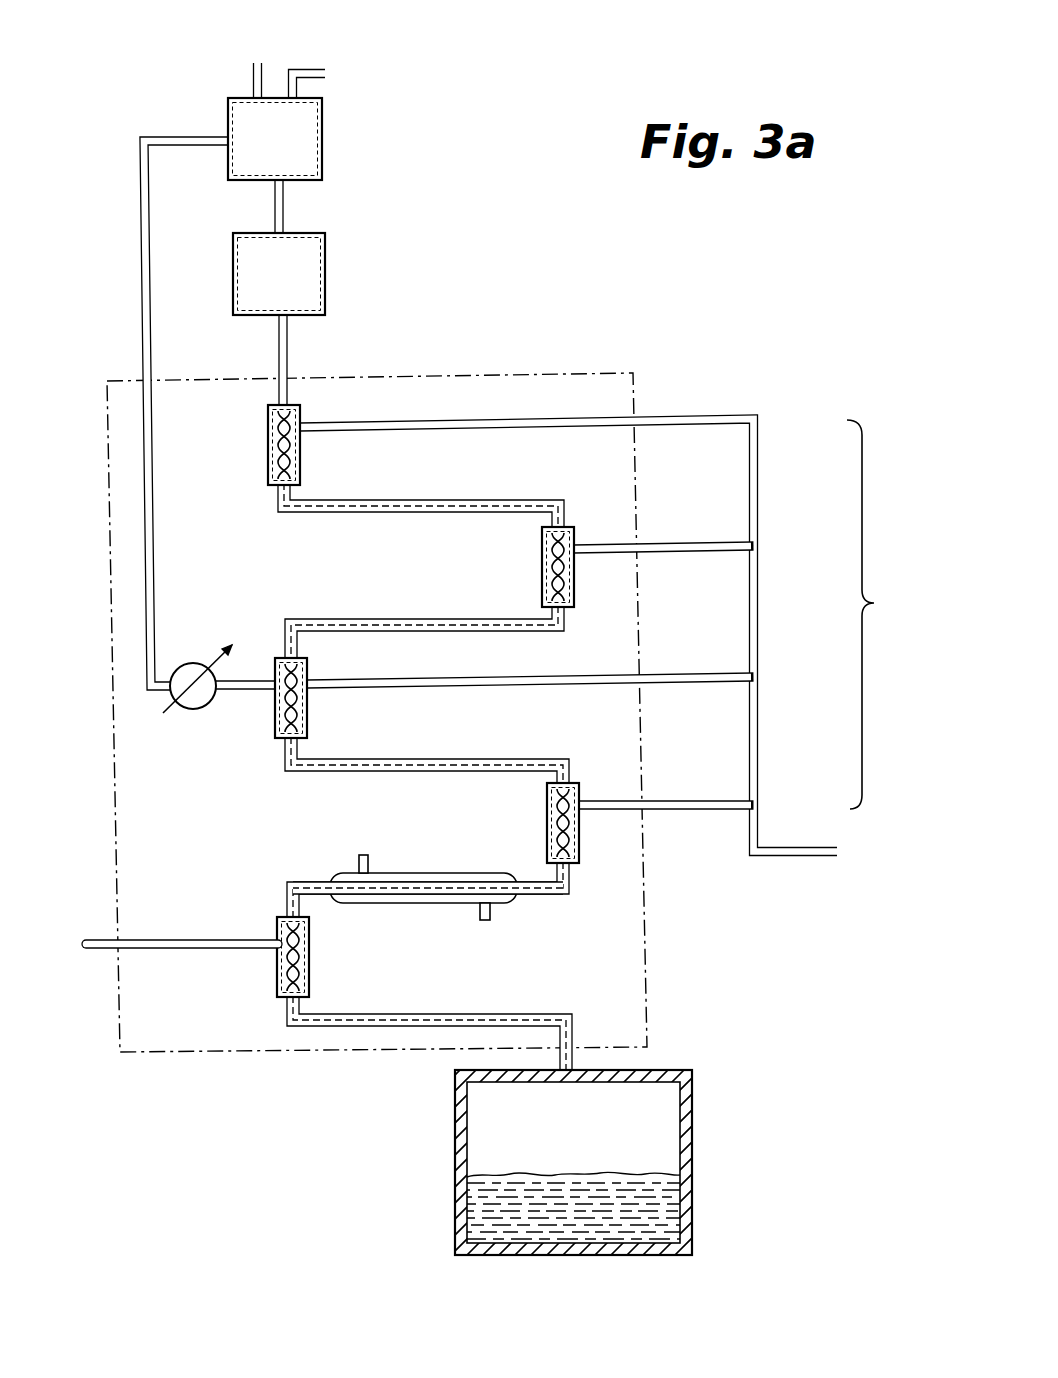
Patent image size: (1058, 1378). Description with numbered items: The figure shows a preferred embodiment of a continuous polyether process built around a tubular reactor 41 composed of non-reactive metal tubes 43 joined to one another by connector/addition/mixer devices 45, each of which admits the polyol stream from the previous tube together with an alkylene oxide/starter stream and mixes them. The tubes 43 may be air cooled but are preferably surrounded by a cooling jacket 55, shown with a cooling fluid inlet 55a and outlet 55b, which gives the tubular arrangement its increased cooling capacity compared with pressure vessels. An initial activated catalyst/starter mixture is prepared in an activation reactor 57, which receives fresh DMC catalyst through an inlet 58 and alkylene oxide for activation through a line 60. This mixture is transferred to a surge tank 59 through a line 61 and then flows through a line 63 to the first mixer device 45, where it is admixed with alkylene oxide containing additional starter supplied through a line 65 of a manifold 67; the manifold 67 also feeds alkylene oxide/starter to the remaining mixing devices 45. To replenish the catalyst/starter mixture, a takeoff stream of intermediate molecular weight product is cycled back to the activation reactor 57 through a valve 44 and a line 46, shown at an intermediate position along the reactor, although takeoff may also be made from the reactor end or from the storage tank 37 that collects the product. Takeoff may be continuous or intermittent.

The storage tank 37 is at (692, 1127).
The tubular reactor 41 is at (486, 352).
The non-reactive metal tubes 43 is at (397, 517).
The valve 44 is at (193, 663).
The connector/addition/mixer device 45 is at (268, 445).
The line 46 is at (143, 537).
The cooling jacket 55 is at (428, 902).
The cooling fluid inlet 55a is at (493, 913).
The cooling fluid outlet 55b is at (357, 868).
The activation reactor 57 is at (322, 118).
The inlet 58 is at (262, 72).
The surge tank 59 is at (325, 255).
The line 60 is at (318, 72).
The line 61 is at (283, 197).
The line 63 is at (288, 358).
The line 65 is at (704, 413).
The manifold 67 is at (881, 614).